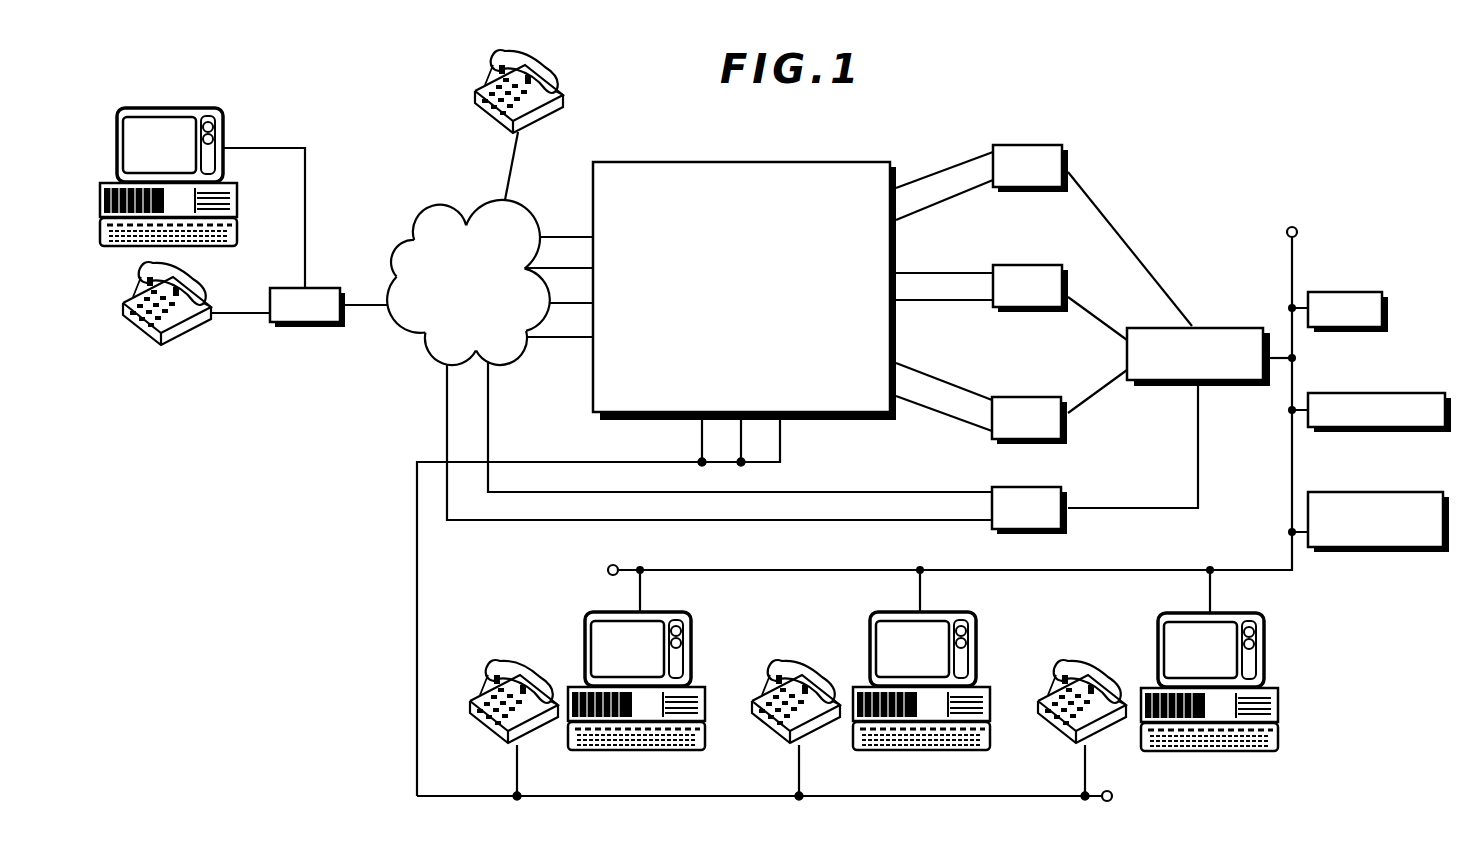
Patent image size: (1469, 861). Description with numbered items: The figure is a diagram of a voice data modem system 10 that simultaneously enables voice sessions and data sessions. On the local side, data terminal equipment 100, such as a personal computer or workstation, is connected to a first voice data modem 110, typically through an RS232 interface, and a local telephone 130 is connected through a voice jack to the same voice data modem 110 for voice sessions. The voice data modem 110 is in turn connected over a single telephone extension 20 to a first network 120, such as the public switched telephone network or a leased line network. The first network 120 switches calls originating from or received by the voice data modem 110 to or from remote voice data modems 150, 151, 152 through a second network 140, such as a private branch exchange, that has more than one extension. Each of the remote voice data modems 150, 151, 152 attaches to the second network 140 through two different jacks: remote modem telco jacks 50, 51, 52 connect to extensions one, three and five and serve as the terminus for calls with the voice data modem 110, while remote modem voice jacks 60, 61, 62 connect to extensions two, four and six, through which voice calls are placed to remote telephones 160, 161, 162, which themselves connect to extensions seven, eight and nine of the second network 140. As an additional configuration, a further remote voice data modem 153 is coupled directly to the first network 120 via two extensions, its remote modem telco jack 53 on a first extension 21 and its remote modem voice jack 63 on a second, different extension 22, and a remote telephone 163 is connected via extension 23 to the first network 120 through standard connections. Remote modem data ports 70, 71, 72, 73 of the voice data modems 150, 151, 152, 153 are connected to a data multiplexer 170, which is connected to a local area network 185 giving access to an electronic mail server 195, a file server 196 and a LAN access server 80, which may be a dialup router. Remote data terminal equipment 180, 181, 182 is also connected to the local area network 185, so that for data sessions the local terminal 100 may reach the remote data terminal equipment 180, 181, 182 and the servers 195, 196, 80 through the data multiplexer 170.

The voice data modem system 10 is at (384, 88).
The data terminal equipment 100 is at (165, 108).
The local telephone 130 is at (138, 340).
The first voice data modem 110 is at (335, 327).
The telephone extension 20 is at (375, 306).
The first network 120 is at (432, 205).
The remote telephone 163 is at (535, 62).
The extension 23 is at (513, 165).
The second extension 22 is at (447, 388).
The first extension 21 is at (490, 390).
The second network 140 is at (738, 162).
The remote modem telco jack 50 is at (952, 167).
The remote modem voice jack 60 is at (921, 209).
The remote modem telco jack 51 is at (968, 272).
The remote modem voice jack 61 is at (921, 302).
The remote modem telco jack 52 is at (947, 383).
The remote modem voice jack 62 is at (925, 408).
The remote modem telco jack 53 is at (903, 491).
The remote modem voice jack 63 is at (912, 521).
The remote voice data modem 150 is at (1025, 145).
The remote voice data modem 151 is at (1025, 265).
The remote voice data modem 152 is at (1025, 397).
The remote voice data modem 153 is at (1025, 487).
The remote modem data port 70 is at (1118, 232).
The remote modem data port 71 is at (1097, 320).
The remote modem data port 72 is at (1092, 395).
The remote modem data port 73 is at (1133, 510).
The data multiplexer 170 is at (1208, 328).
The local area network 185 is at (1293, 466).
The electronic mail server 195 is at (1340, 292).
The file server 196 is at (1390, 393).
The LAN access server 80 is at (1388, 492).
The remote telephone 160 is at (497, 662).
The remote data terminal equipment 180 is at (697, 635).
The remote telephone 161 is at (779, 662).
The remote data terminal equipment 181 is at (978, 635).
The remote telephone 162 is at (1064, 662).
The remote data terminal equipment 182 is at (1267, 637).